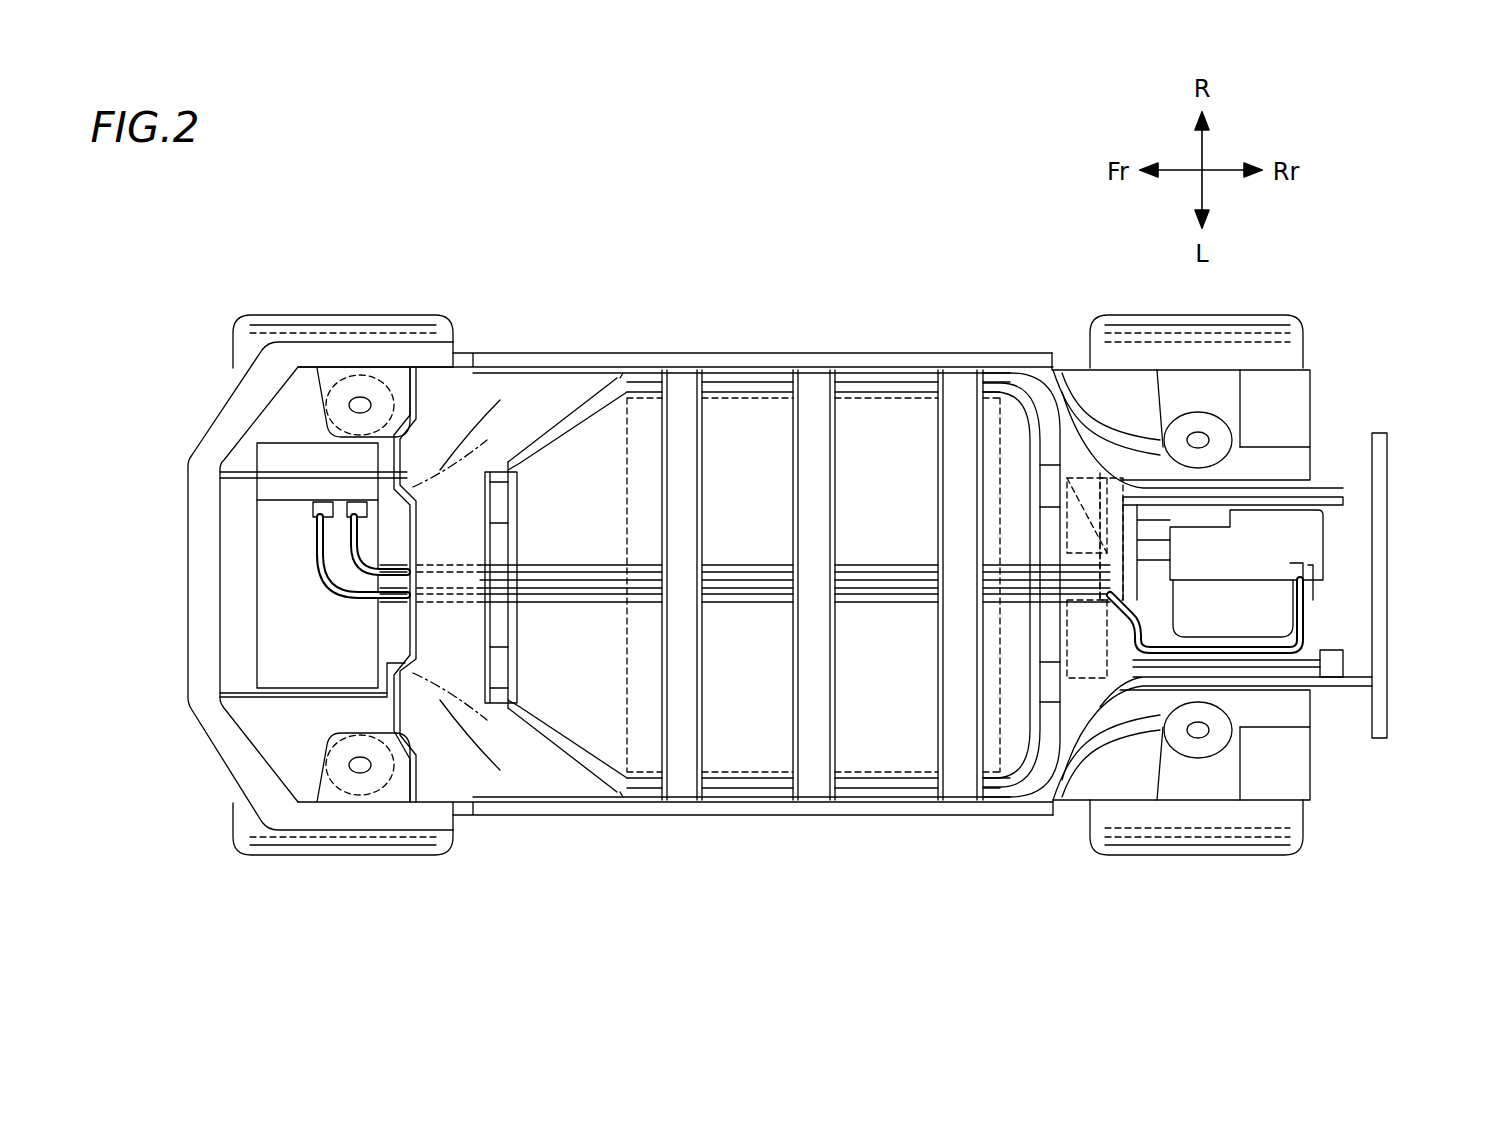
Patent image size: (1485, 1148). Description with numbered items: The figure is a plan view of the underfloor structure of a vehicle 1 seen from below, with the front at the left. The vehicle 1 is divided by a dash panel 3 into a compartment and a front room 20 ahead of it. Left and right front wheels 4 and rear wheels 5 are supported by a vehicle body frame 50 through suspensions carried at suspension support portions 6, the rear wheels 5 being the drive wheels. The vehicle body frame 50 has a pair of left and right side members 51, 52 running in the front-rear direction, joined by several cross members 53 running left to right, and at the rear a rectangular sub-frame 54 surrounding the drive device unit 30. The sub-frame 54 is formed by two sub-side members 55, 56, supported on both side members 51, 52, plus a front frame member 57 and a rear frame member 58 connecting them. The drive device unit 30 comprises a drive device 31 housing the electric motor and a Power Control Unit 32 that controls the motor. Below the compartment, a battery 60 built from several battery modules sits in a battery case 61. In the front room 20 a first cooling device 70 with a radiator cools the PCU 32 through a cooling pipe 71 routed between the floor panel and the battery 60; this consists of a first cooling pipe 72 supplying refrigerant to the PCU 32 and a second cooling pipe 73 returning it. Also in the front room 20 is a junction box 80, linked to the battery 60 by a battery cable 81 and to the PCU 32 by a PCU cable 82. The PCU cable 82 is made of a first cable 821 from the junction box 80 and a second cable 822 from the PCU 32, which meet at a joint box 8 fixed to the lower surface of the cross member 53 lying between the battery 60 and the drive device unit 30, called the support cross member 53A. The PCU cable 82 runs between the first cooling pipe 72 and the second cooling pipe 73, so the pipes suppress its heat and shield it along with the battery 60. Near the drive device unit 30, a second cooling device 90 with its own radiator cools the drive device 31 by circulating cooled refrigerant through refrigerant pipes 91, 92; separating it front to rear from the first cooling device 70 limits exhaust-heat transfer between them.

The vehicle 1 is at (837, 260).
The dash panel 3 is at (445, 520).
The front wheel 4 is at (380, 313).
The rear wheel 5 is at (1237, 313).
The suspension support portion 6 is at (316, 405).
The joint box 8 is at (1075, 700).
The front room 20 is at (226, 605).
The drive device unit 30 is at (1321, 578).
The drive device 31 is at (1440, 548).
The Power Control Unit (PCU) 32 is at (1330, 540).
The vehicle body frame 50 is at (804, 550).
The side member 51 is at (914, 352).
The side member 52 is at (876, 815).
The cross member 53 is at (485, 460).
The support cross member 53A is at (1095, 745).
The sub-frame 54 is at (1340, 516).
The sub-side member 55 is at (1332, 497).
The sub-side member 56 is at (1335, 670).
The front frame member 57 is at (1165, 712).
The rear frame member 58 is at (1338, 657).
The battery 60 is at (600, 430).
The battery case 61 is at (740, 372).
The first cooling device 70 is at (186, 592).
The cooling pipe 71 is at (745, 531).
The first cooling pipe 72 is at (778, 592).
The second cooling pipe 73 is at (715, 565).
The junction box 80 is at (272, 542).
The battery cable 81 is at (330, 578).
The PCU cable 82 is at (385, 595).
The second cooling device 90 is at (1088, 430).
The refrigerant pipe 91 is at (1322, 702).
The refrigerant pipe 92 is at (1128, 478).
The first cable 821 is at (887, 578).
The second cable 822 is at (1300, 662).